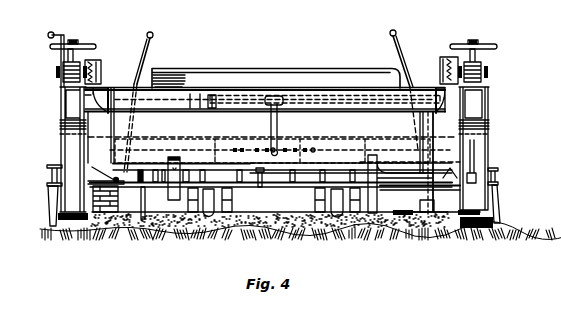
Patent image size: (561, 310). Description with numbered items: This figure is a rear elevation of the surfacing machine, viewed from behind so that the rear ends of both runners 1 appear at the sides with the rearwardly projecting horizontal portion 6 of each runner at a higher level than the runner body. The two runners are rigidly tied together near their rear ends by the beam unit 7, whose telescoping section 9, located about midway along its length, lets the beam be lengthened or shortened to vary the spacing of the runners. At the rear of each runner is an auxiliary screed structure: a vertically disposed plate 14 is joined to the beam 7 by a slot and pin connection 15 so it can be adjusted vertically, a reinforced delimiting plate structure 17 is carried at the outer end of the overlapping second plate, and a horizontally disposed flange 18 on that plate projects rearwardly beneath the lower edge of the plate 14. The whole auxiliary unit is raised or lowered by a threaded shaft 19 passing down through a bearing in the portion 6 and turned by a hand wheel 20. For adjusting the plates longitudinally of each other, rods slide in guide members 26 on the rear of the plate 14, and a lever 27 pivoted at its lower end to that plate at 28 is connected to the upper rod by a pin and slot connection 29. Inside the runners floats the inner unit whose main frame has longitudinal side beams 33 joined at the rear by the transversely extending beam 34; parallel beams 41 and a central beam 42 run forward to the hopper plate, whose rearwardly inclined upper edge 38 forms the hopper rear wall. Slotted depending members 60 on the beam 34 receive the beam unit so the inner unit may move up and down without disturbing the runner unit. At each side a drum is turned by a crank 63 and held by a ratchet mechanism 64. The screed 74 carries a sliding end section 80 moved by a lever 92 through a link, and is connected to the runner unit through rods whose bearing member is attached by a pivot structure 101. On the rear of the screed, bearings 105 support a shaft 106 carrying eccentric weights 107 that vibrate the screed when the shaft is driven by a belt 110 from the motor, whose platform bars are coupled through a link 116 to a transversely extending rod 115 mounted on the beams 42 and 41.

The runner 1 is at (60, 134).
The rearwardly projecting horizontal portion 6 is at (60, 99).
The beam unit 7 is at (165, 138).
The telescoping section 9 is at (258, 147).
The vertically disposed plate 14 is at (486, 195).
The slot and pin connection 15 is at (377, 200).
The delimiting plate structure 17 is at (48, 201).
The horizontally disposed flange 18 is at (452, 215).
The shaft 19 is at (61, 57).
The hand wheel 20 is at (88, 45).
The guide member 26 is at (403, 216).
The lever 27 is at (434, 146).
The pivot 28 is at (431, 216).
The pin and slot connection 29 is at (440, 188).
The side beam 33 is at (108, 110).
The transversely extending beam 34 is at (197, 100).
The rearwardly inclined upper edge 38 is at (253, 77).
The longitudinally extending beam 41 is at (164, 72).
The longitudinally extending beam 42 is at (215, 98).
The slotted depending member 60 is at (419, 127).
The crank 63 is at (51, 32).
The ratchet mechanism 64 is at (97, 66).
The screed 74 is at (168, 206).
The section 80 is at (120, 200).
The lever 92 is at (152, 34).
The pivot structure 101 is at (143, 219).
The bearing 105 is at (191, 206).
The shaft 106 is at (303, 200).
The weight 107 is at (339, 213).
The belt 110 is at (305, 195).
The transversely extending rod 115 is at (316, 95).
The link 116 is at (282, 131).